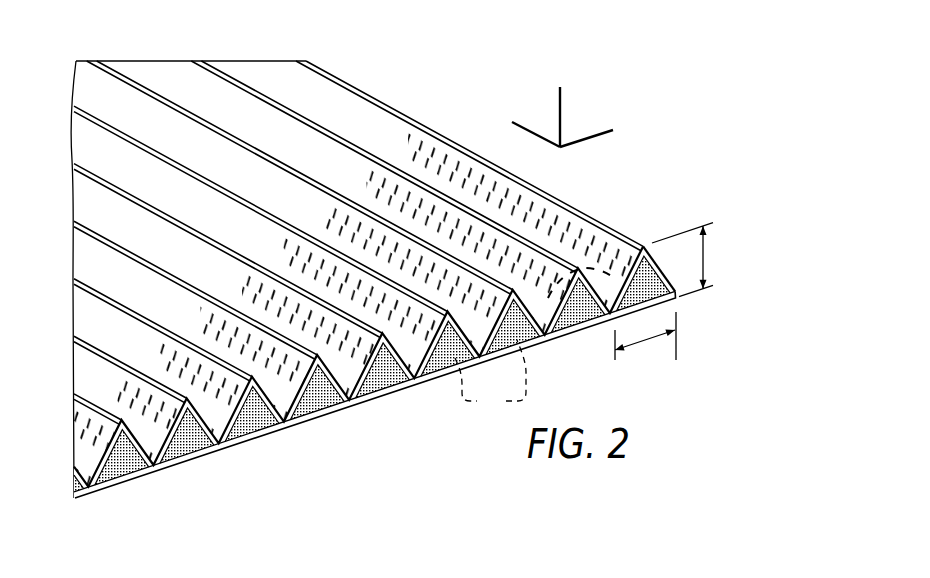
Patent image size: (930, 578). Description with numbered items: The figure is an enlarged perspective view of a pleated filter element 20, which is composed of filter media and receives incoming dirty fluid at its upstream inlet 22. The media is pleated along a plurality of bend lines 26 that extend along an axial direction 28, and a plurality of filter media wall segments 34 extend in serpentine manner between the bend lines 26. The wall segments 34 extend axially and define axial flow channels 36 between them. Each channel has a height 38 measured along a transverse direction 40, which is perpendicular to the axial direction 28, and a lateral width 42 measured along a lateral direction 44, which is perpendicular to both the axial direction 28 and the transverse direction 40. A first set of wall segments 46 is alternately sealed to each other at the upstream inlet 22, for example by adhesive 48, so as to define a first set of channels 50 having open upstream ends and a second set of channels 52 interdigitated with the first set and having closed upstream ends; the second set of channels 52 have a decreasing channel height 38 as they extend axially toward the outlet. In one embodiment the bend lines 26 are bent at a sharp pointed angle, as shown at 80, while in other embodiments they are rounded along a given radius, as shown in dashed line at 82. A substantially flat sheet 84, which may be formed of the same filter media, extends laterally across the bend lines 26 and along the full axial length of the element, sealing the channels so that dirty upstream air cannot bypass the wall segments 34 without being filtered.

The filter element 20 is at (380, 264).
The upstream inlet 22 is at (667, 258).
The bend lines 26 is at (88, 478).
The axial direction 28 is at (527, 129).
The filter media wall segments 34 is at (97, 380).
The axial flow channels 36 is at (212, 404).
The channel height 38 is at (704, 262).
The transverse direction 40 is at (563, 115).
The lateral width 42 is at (650, 340).
The lateral direction 44 is at (590, 134).
The first set of wall segments 46 is at (272, 412).
The adhesive 48 is at (322, 398).
The first set of channels 50 is at (417, 392).
The second set of channels 52 is at (490, 378).
The sharp pointed angle 80 is at (643, 246).
The rounded bend line 82 is at (596, 268).
The flat sheet 84 is at (72, 497).